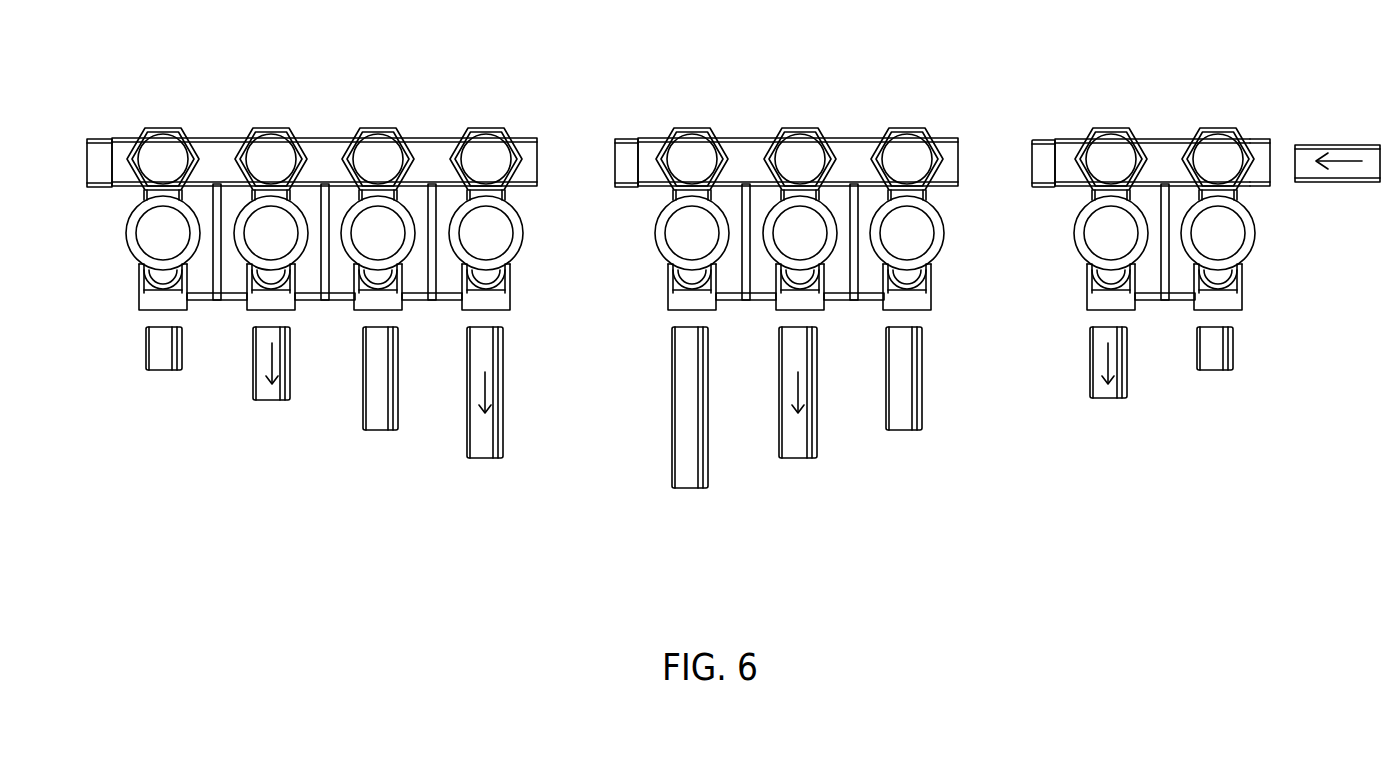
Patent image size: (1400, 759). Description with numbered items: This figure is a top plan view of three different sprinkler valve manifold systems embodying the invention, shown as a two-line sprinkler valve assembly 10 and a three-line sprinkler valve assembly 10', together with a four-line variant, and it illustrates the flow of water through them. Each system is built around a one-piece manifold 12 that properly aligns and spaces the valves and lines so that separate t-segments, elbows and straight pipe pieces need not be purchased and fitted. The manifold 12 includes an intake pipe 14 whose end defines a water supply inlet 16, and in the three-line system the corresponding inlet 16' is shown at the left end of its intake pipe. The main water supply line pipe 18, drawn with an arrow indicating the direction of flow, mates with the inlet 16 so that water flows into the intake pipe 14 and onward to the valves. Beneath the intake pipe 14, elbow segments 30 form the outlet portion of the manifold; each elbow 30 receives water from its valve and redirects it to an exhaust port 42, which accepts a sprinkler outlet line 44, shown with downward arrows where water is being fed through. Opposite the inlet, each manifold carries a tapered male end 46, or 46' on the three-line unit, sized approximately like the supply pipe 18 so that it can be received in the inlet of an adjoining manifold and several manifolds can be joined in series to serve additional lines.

The sprinkler valve assembly 10 is at (1180, 240).
The sprinkler valve assembly 10' is at (795, 260).
The manifold 12 is at (1266, 266).
The intake pipe 14 is at (1166, 153).
The water supply inlet 16 is at (1289, 133).
The water supply inlet 16' is at (821, 190).
The main water supply line pipe 18 is at (1330, 182).
The elbow segment 30 is at (1215, 127).
The exhaust port 42 is at (1103, 308).
The sprinkler outlet line 44 is at (1120, 395).
The male end 46 is at (1017, 136).
The male end 46' is at (612, 128).